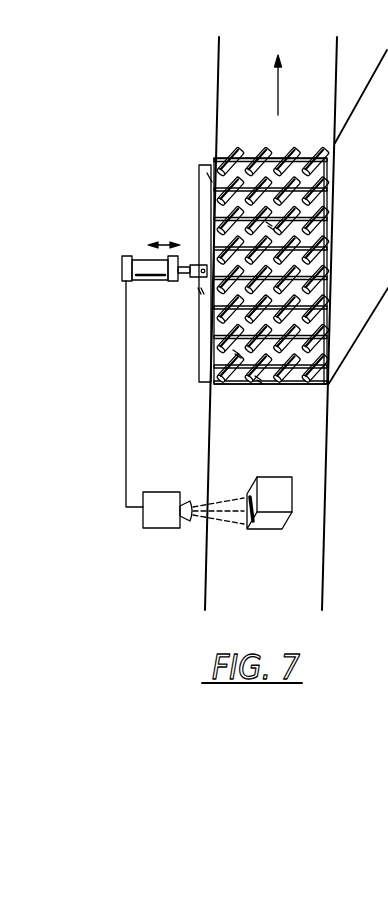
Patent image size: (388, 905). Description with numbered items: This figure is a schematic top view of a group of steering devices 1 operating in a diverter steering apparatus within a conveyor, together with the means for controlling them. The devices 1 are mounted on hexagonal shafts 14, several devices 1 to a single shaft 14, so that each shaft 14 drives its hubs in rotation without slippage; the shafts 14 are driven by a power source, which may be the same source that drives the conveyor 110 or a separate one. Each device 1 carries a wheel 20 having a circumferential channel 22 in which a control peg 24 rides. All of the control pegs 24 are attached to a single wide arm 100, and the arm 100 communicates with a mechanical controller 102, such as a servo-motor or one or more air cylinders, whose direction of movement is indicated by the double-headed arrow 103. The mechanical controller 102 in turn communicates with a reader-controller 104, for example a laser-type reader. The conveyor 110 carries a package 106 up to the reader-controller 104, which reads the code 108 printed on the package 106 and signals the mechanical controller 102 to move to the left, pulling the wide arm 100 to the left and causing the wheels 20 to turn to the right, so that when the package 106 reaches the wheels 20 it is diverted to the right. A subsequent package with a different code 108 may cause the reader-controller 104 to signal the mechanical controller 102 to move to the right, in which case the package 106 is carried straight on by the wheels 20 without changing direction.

The device 1 is at (262, 137).
The hexagonal shaft 14 is at (303, 162).
The wheel 20 is at (330, 385).
The circumferential channel 22 is at (327, 213).
The control peg 24 is at (268, 383).
The wide arm 100 is at (200, 175).
The mechanical controller 102 is at (153, 281).
The reciprocating direction arrow 103 is at (178, 213).
The reader-controller 104 is at (158, 529).
The package 106 is at (287, 495).
The code 108 is at (247, 525).
The conveyor 110 is at (268, 596).